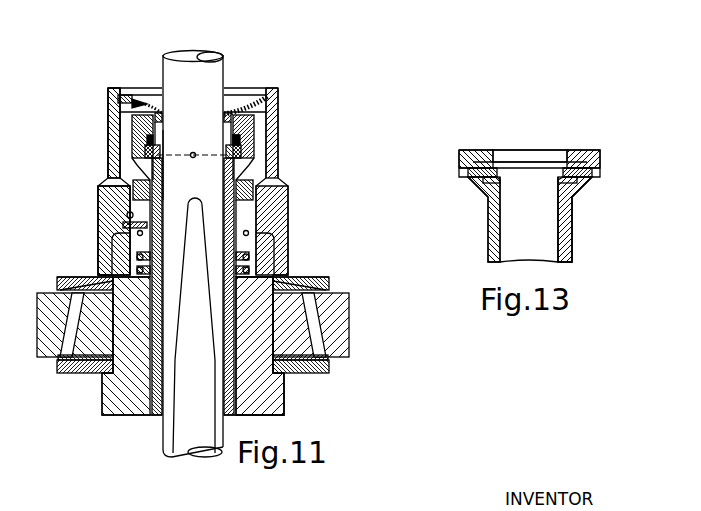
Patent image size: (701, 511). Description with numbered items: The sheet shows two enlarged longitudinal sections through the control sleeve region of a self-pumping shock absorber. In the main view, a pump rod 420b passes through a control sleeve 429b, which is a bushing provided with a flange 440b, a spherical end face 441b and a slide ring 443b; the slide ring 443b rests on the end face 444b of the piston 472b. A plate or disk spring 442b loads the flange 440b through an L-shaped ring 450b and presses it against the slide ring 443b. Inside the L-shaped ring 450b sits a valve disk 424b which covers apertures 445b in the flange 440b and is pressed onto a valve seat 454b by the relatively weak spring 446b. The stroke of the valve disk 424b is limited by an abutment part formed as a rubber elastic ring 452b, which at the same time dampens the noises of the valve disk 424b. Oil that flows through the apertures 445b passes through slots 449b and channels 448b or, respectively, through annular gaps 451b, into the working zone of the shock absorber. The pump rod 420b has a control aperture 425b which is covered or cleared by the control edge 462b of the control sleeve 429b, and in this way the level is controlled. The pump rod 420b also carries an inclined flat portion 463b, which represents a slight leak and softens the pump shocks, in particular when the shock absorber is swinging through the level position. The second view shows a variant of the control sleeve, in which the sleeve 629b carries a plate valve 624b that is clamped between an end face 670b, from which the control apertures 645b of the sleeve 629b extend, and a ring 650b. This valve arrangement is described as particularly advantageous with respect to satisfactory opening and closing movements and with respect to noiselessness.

In FIG. 11, the pump rod 420b is at (217, 70).
In FIG. 11, the control edge 462b is at (161, 148).
In FIG. 11, the inclined flat portion 463b is at (185, 422).
In FIG. 11, the valve seat 454b is at (162, 152).
In FIG. 11, the control aperture 425b is at (193, 152).
In FIG. 11, the annular gaps 451b is at (152, 112).
In FIG. 11, the spring 446b is at (132, 118).
In FIG. 11, the slots 449b is at (148, 156).
In FIG. 11, the channels 448b is at (118, 168).
In FIG. 11, the flange 440b is at (145, 167).
In FIG. 11, the apertures 445b is at (130, 195).
In FIG. 11, the end face 444b is at (130, 217).
In FIG. 11, the piston 472b is at (98, 255).
In FIG. 11, the plate or disk spring 442b is at (278, 93).
In FIG. 11, the L-shaped ring 450b is at (257, 120).
In FIG. 11, the rubber elastic ring 452b is at (257, 137).
In FIG. 11, the valve disk 424b is at (257, 157).
In FIG. 11, the spherical end face 441b is at (248, 173).
In FIG. 11, the slide ring 443b is at (270, 192).
In FIG. 11, the control sleeve 429b is at (238, 357).
In FIG. 13, the ring 650b is at (567, 152).
In FIG. 13, the plate valve 624b is at (492, 168).
In FIG. 13, the end face 670b is at (473, 192).
In FIG. 13, the control apertures 645b is at (487, 190).
In FIG. 13, the sleeve 629b is at (568, 240).